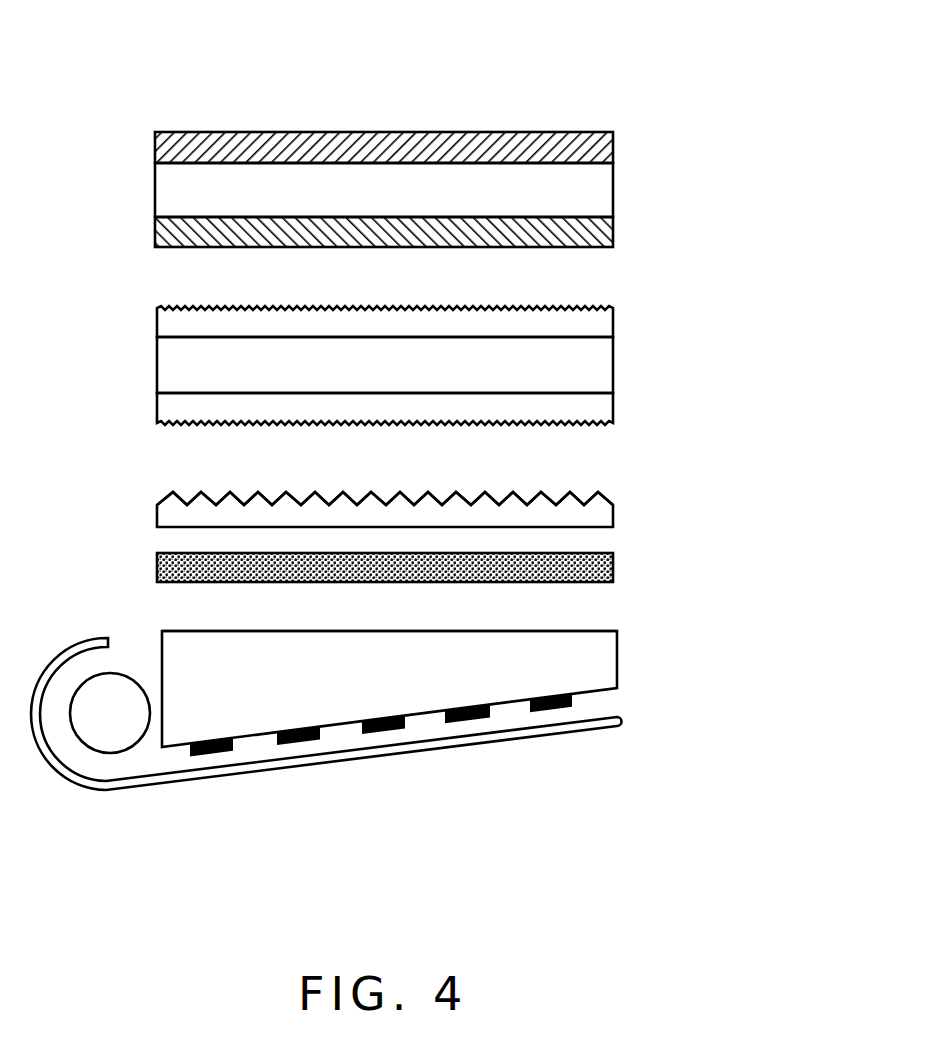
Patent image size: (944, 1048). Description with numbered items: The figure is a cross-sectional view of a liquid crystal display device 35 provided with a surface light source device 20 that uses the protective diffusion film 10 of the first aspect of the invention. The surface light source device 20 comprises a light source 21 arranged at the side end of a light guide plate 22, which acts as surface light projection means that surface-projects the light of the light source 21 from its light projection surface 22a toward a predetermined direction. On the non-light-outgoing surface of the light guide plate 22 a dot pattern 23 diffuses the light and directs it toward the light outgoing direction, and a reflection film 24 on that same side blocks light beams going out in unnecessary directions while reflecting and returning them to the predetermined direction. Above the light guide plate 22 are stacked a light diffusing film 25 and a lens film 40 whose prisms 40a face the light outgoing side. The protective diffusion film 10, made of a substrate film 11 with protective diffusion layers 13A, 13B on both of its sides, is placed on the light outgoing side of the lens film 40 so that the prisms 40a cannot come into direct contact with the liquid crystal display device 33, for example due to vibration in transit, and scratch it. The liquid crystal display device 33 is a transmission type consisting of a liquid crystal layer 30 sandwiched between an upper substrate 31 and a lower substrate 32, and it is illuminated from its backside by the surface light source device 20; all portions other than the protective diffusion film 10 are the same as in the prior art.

The protective diffusion film 10 is at (473, 364).
The substrate film 11 is at (613, 367).
The protective diffusion layer 13A is at (613, 322).
The protective diffusion layer 13B is at (441, 409).
The surface light source device 20 is at (442, 588).
The light source 21 is at (98, 740).
The light guide plate 22 is at (180, 735).
The light projection surface 22a is at (617, 631).
The light scattering dot pattern 23 is at (380, 733).
The reflection film 24 is at (555, 725).
The light diffusing film 25 is at (615, 565).
The transparent substrate 30 is at (613, 190).
The first reflective layer 31 is at (613, 145).
The second reflective layer 32 is at (433, 232).
The liquid crystal display device 33 is at (471, 190).
The liquid crystal display device 35 is at (551, 121).
The lens film 40 is at (615, 510).
The prism 40a is at (605, 492).